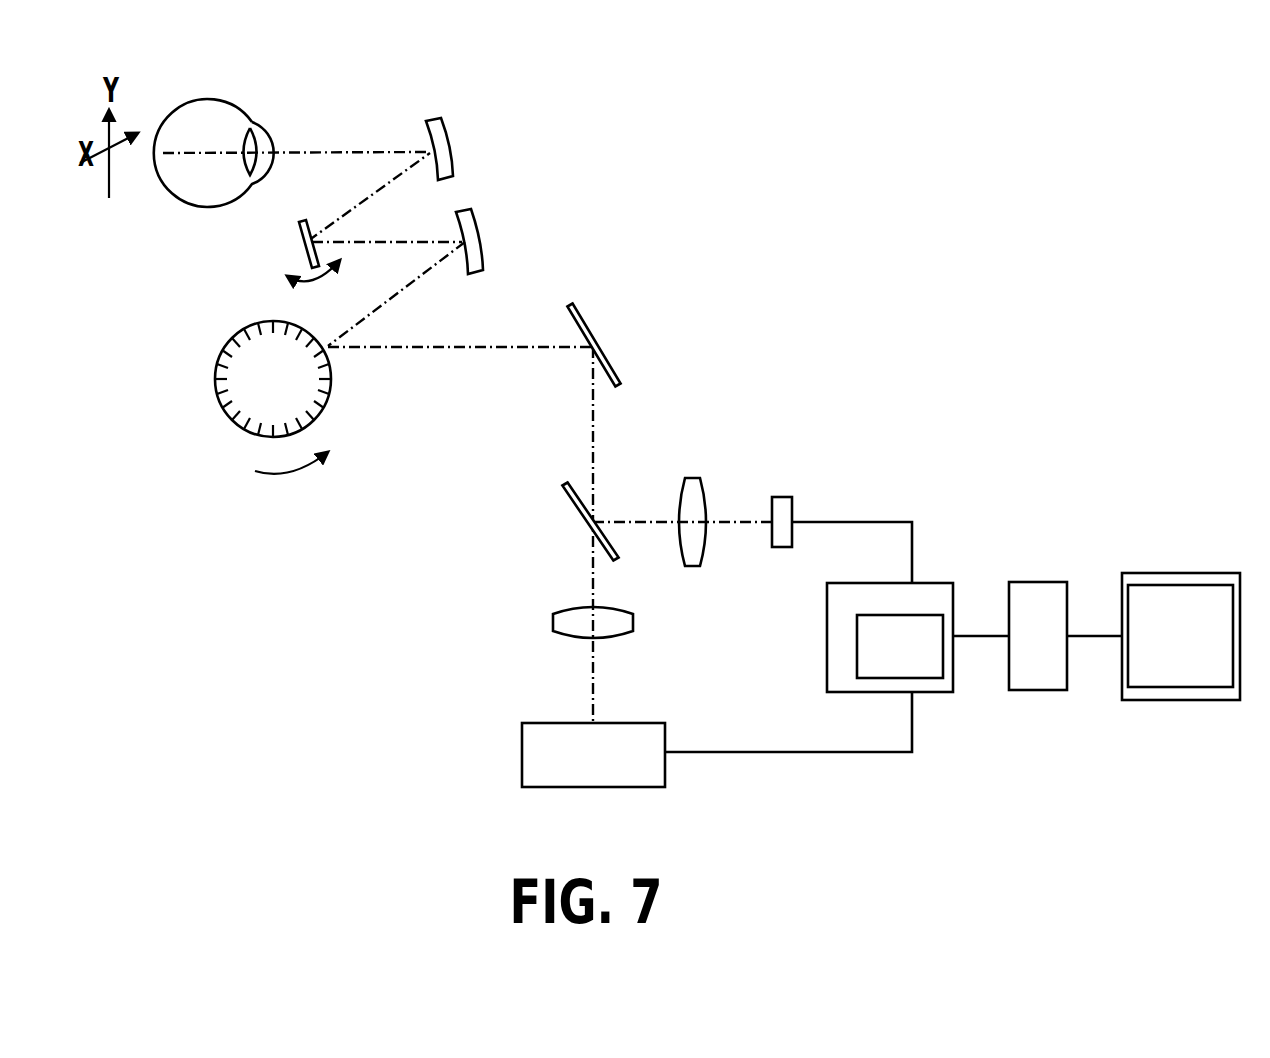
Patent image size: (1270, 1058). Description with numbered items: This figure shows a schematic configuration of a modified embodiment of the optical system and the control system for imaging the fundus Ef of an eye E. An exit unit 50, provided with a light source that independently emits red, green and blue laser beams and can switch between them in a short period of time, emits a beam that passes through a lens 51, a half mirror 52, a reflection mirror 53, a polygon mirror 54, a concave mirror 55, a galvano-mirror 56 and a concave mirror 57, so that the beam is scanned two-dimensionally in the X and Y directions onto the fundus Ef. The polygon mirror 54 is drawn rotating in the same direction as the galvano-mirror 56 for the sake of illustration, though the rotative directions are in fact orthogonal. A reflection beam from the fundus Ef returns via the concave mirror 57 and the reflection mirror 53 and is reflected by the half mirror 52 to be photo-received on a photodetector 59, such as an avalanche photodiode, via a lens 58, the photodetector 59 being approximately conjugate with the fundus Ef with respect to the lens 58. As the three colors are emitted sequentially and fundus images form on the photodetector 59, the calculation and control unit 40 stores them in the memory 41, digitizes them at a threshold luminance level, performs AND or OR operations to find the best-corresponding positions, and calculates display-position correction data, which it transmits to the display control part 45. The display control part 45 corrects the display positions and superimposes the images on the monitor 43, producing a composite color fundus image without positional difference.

The eye E is at (190, 181).
The fundus Ef is at (182, 110).
The calculation and control unit 40 is at (934, 582).
The memory 41 is at (882, 665).
The monitor 43 is at (1150, 573).
The display control part 45 is at (1027, 582).
The exit unit 50 is at (543, 723).
The lens 51 is at (558, 614).
The half mirror 52 is at (569, 503).
The reflection mirror 53 is at (586, 322).
The polygon mirror 54 is at (222, 413).
The concave mirror 55 is at (478, 224).
The galvano-mirror 56 is at (299, 239).
The concave mirror 57 is at (444, 121).
The lens 58 is at (704, 495).
The photodetector 59 is at (781, 497).